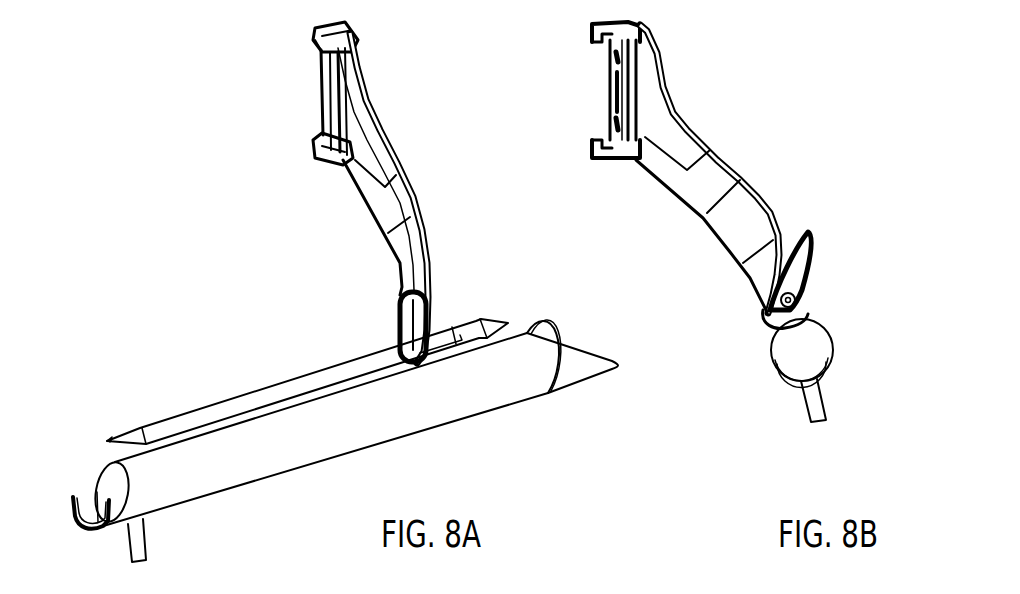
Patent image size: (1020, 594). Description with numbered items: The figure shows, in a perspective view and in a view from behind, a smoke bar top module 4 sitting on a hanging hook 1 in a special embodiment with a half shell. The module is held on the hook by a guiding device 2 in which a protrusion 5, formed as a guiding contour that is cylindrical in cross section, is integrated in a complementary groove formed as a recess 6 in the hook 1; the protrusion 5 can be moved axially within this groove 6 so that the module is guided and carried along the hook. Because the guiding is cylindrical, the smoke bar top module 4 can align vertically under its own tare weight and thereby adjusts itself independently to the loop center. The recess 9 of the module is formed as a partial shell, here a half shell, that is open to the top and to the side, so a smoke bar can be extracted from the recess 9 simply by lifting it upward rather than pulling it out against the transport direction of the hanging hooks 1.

In FIG. 8A, the hanging hook 1 is at (404, 177).
In FIG. 8B, the hanging hook 1 is at (722, 160).
In FIG. 8A, the guiding device 2 is at (425, 313).
In FIG. 8A, the smoke bar top module 4 is at (298, 456).
In FIG. 8B, the smoke bar top module 4 is at (834, 343).
In FIG. 8A, the protrusion 5 is at (115, 433).
In FIG. 8B, the protrusion 5 is at (807, 297).
In FIG. 8A, the recess 6 is at (399, 342).
In FIG. 8B, the recess 6 is at (773, 321).
In FIG. 8A, the recess 9 is at (77, 494).